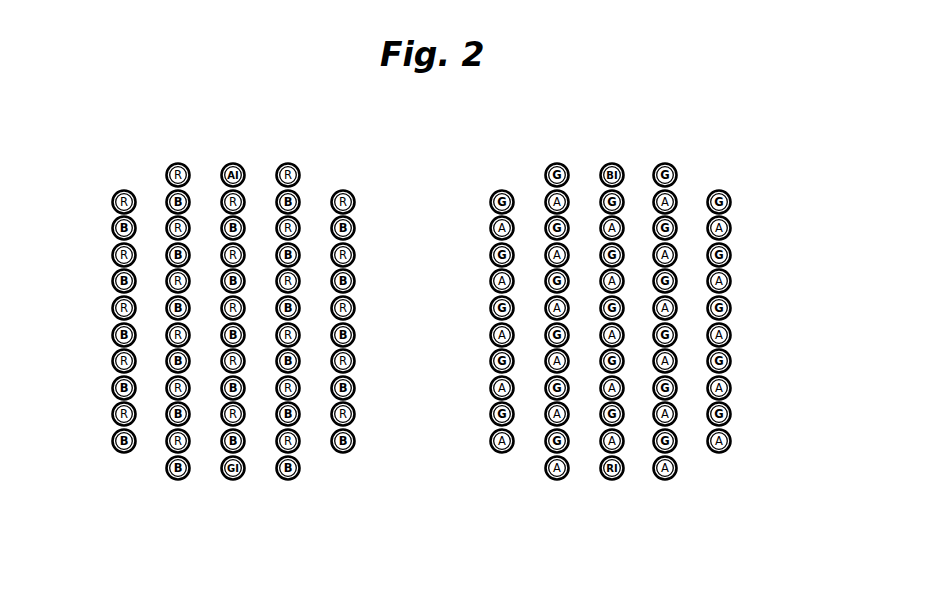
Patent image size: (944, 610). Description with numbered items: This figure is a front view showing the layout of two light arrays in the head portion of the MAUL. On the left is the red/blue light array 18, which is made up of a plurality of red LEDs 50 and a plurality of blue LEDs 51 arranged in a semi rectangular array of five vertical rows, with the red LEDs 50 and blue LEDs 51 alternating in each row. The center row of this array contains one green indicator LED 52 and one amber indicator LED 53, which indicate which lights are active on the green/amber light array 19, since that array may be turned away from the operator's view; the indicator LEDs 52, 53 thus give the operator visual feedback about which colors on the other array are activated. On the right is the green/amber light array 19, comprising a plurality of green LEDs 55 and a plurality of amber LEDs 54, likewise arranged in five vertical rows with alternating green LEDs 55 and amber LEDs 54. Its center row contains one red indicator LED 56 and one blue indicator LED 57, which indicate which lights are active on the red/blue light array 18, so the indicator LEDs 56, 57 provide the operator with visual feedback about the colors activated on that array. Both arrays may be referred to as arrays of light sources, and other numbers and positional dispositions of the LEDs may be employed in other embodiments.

The red/blue light array 18 is at (105, 98).
The green/amber light array 19 is at (766, 102).
The red LEDs 50 is at (112, 307).
The blue LEDs 51 is at (112, 442).
The green indicator LED 52 is at (234, 477).
The amber indicator LED 53 is at (237, 166).
The amber LEDs 54 is at (490, 334).
The green LEDs 55 is at (490, 202).
The red indicator LED 56 is at (610, 481).
The blue indicator LED 57 is at (602, 168).